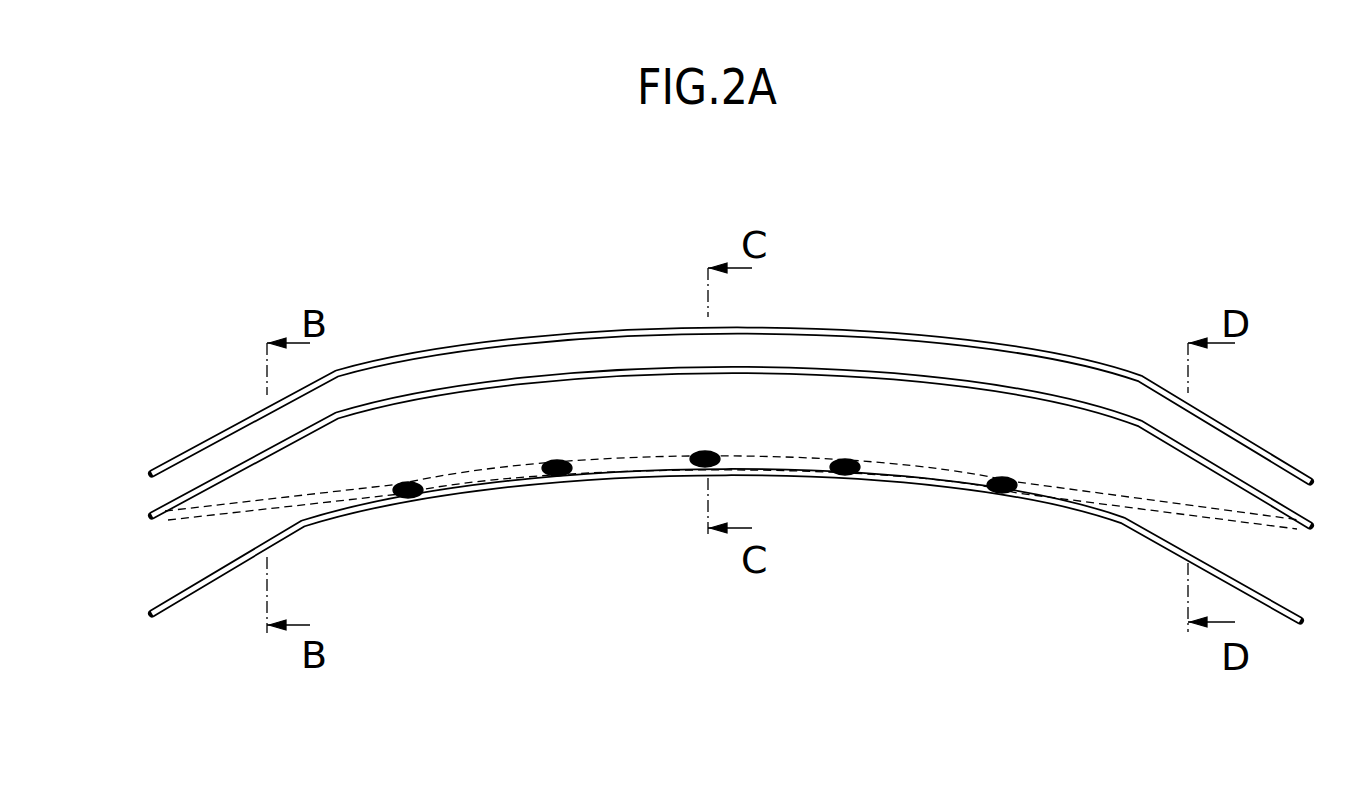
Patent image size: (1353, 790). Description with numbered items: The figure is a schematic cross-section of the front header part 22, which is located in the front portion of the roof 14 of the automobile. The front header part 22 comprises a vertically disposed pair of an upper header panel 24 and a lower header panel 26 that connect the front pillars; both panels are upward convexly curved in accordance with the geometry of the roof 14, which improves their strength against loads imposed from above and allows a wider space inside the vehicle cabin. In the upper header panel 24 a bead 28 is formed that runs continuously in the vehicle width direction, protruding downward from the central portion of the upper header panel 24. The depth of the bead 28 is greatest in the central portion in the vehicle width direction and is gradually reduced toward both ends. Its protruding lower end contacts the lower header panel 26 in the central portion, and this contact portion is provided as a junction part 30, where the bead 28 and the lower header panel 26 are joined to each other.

The front header part 22 is at (1048, 280).
The roof 14 is at (1132, 371).
The upper header panel 24 is at (158, 509).
The lower header panel 26 is at (183, 600).
The bead 28 is at (173, 522).
The junction part 30 is at (716, 454).